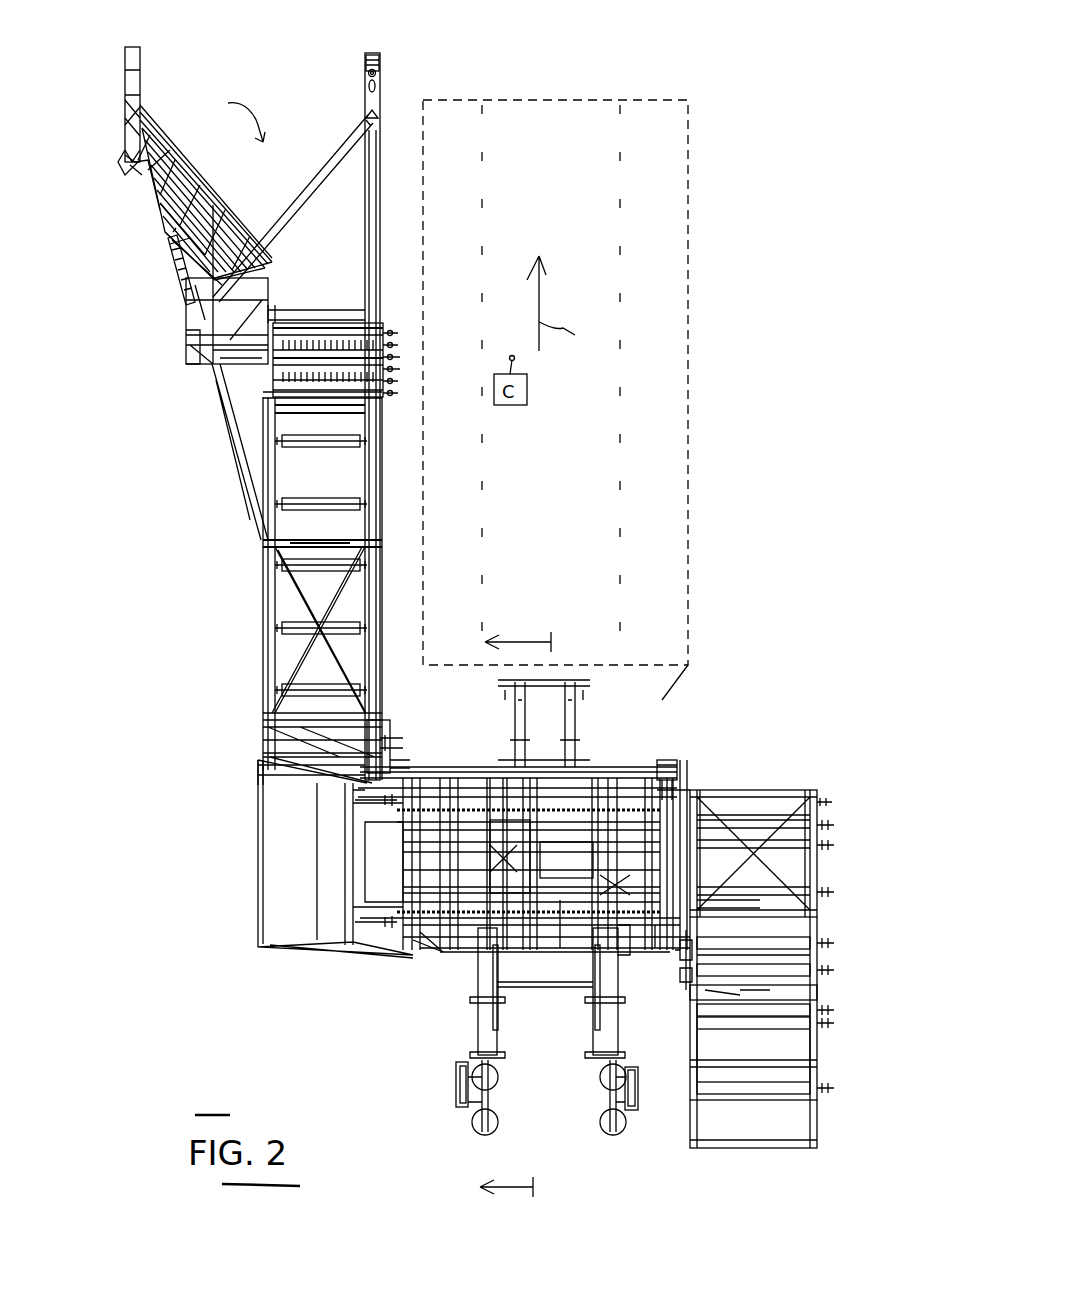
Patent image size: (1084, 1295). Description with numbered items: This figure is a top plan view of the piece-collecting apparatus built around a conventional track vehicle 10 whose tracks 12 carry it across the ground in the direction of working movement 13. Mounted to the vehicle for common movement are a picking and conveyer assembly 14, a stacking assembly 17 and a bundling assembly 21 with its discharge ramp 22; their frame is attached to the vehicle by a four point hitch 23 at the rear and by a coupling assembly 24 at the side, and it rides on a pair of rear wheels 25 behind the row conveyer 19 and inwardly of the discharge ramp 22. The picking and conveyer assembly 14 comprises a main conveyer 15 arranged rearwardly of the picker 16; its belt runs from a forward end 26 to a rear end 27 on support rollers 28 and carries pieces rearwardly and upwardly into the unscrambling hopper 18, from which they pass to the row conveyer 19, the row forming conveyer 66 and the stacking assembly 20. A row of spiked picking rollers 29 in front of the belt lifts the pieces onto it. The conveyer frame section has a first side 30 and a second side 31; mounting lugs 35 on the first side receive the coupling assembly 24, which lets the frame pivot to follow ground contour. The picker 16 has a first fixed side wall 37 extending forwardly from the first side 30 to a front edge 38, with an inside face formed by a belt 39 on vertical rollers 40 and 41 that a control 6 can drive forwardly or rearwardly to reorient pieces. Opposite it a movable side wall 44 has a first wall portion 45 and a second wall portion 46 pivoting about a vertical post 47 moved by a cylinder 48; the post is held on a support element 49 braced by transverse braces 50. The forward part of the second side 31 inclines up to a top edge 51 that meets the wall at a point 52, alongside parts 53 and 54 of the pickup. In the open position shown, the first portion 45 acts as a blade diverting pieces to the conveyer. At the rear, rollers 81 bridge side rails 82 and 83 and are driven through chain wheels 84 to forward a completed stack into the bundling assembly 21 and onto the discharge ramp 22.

The direction arrow 6 is at (515, 919).
The track vehicle 10 is at (610, 215).
The tracks 12 is at (656, 262).
The direction of working movement 13 is at (568, 303).
The picking and conveyer assembly 14 is at (270, 540).
The main conveyer 15 is at (287, 581).
The picker 16 is at (222, 177).
The stacking assembly 17 is at (652, 752).
The unscrambling hopper 18 is at (290, 940).
The row conveyer 19 is at (693, 767).
The stacking assembly 20 is at (819, 804).
The bundling assembly 21 is at (850, 958).
The discharge ramp 22 is at (805, 1057).
The four point hitch 23 is at (600, 705).
The coupling assembly 24 is at (417, 411).
The rear wheels 25 is at (588, 1103).
The forward end 26 is at (280, 427).
The rear end 27 is at (266, 722).
The support rollers 28 is at (335, 495).
The picking rollers 29 is at (312, 320).
The first side 30 is at (366, 545).
The second side 31 is at (264, 660).
The mounting lugs 35 is at (386, 340).
The first fixed side wall 37 is at (376, 153).
The front edge 38 is at (374, 70).
The belt 39 is at (367, 92).
The roller 40 is at (378, 75).
The roller 41 is at (380, 305).
The movable side wall 44 is at (116, 170).
The first wall portion 45 is at (227, 195).
The second wall portion 46 is at (140, 52).
The vertical post 47 is at (186, 333).
The cylinder 48 is at (168, 262).
The support element 49 is at (257, 380).
The transverse braces 50 is at (334, 156).
The top edge 51 is at (266, 470).
The point 52 is at (214, 500).
The inclined conveyor member 53 is at (176, 140).
The post bracket 54 is at (166, 190).
The row forming conveyer 66 is at (537, 786).
The rollers 81 is at (800, 882).
The side rail 82 is at (812, 908).
The side rail 83 is at (688, 957).
The chain wheels 84 is at (822, 828).